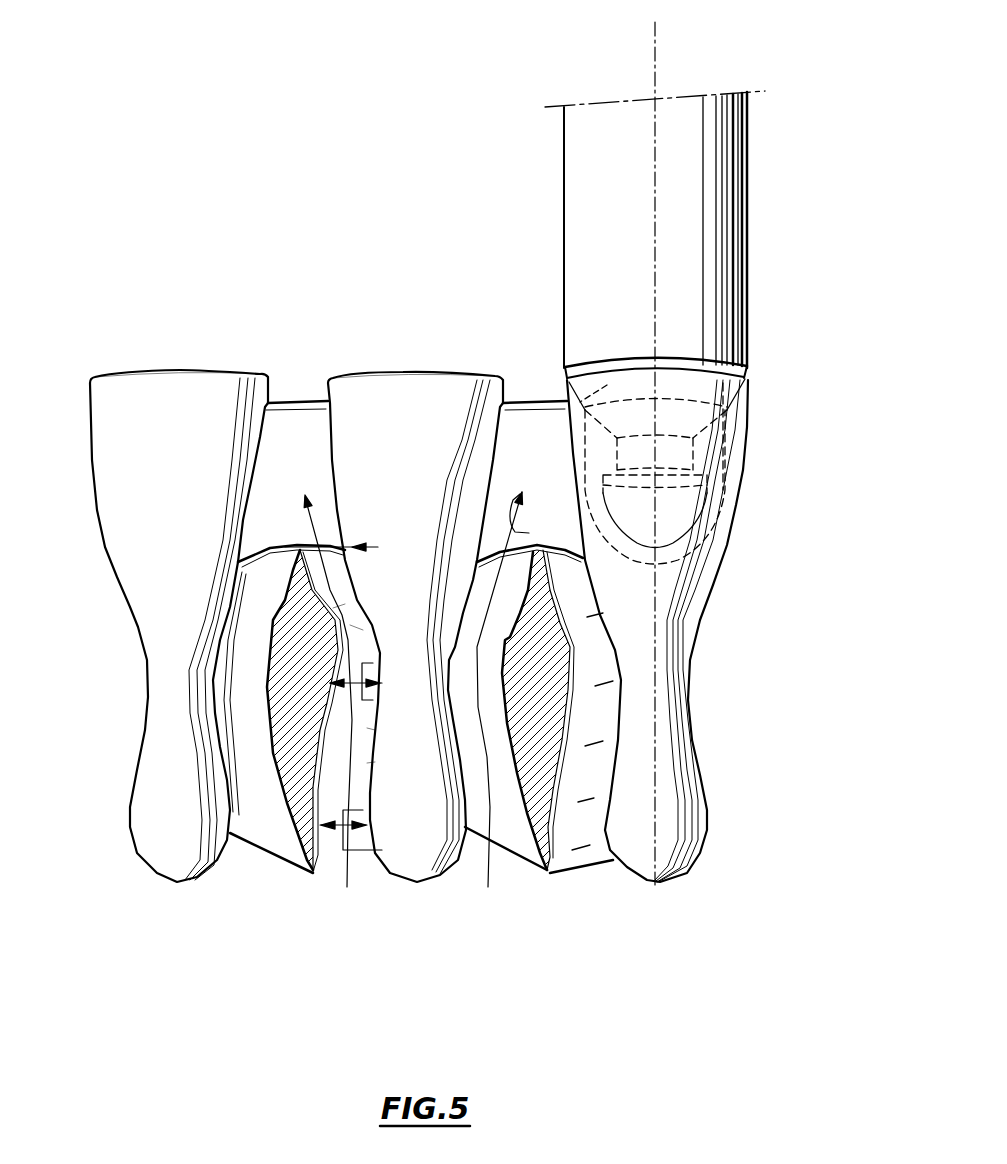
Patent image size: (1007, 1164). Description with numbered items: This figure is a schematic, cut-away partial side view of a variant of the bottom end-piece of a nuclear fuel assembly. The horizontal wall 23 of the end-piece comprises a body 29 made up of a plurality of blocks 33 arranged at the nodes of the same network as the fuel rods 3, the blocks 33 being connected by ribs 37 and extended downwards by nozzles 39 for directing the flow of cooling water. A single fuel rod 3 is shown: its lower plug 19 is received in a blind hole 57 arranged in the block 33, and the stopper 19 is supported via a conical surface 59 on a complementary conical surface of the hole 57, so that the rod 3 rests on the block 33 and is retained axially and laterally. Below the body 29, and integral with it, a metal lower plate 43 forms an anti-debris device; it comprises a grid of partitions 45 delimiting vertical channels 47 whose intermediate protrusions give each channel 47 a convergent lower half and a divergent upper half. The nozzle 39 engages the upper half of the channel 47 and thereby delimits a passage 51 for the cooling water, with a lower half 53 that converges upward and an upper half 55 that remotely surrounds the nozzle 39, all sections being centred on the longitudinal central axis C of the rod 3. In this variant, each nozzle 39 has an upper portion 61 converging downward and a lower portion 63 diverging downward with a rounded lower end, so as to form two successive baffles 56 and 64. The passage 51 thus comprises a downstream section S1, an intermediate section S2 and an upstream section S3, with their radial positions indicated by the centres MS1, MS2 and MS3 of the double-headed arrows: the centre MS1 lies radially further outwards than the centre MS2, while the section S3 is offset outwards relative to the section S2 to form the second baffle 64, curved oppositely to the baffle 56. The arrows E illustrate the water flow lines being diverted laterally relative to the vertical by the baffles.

The fuel rod 3 is at (752, 113).
The lower plug 19 is at (672, 364).
The horizontal wall 23 is at (701, 631).
The body 29 is at (765, 398).
The block 33 is at (295, 397).
The rib 37 is at (298, 430).
The nozzle 39 is at (130, 620).
The lower plate 43 is at (712, 692).
The partition 45 is at (293, 687).
The channel 47 is at (490, 635).
The passage 51 is at (343, 752).
The lower half 53 is at (367, 763).
The upper half 55 is at (363, 630).
The baffle 56 is at (333, 608).
The blind hole 57 is at (730, 445).
The conical surface 59 is at (605, 378).
The upper portion 61 is at (371, 519).
The lower portion 63 is at (393, 829).
The second baffle 64 is at (367, 728).
The central axis C is at (657, 37).
The flow line arrow E is at (318, 515).
The downstream section S1 is at (336, 545).
The intermediate section S2 is at (373, 663).
The upstream section S3 is at (363, 810).
The centre of section S1 MS1 is at (338, 556).
The centre of section S2 MS2 is at (375, 700).
The centre of section S3 MS3 is at (382, 850).